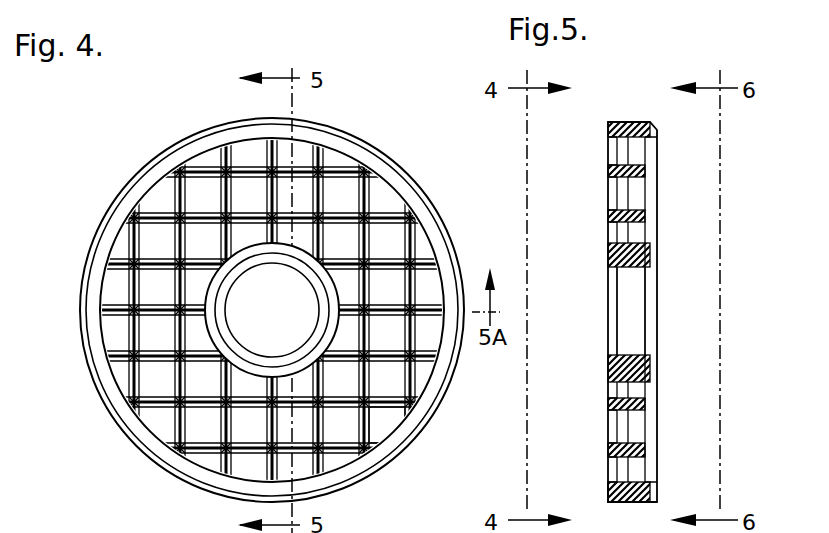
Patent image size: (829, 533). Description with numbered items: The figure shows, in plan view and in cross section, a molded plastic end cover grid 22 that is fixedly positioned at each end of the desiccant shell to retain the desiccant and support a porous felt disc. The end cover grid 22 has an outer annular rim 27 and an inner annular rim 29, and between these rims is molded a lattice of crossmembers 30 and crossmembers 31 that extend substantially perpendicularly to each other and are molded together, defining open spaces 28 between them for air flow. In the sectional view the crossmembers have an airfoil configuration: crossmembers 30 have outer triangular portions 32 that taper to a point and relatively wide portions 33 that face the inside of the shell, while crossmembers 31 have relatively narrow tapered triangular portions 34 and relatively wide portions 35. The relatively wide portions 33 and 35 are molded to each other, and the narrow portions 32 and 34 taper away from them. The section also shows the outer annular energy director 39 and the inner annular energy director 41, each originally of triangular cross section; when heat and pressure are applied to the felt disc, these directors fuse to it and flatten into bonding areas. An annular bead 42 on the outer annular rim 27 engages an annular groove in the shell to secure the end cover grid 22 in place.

In FIG. 4, the end cover grid 22 is at (152, 186).
In FIG. 5, the end cover grid 22 is at (645, 122).
In FIG. 4, the annular bead 42 is at (158, 206).
In FIG. 5, the annular bead 42 is at (620, 122).
In FIG. 4, the outer annular rim 27 is at (114, 240).
In FIG. 5, the outer annular rim 27 is at (640, 500).
In FIG. 4, the open spaces 28 is at (243, 190).
In FIG. 4, the crossmembers 30 is at (392, 200).
In FIG. 5, the crossmembers 30 is at (648, 174).
In FIG. 4, the outer triangular portions 32 is at (387, 226).
In FIG. 5, the outer triangular portions 32 is at (620, 170).
In FIG. 4, the narrow tapered triangular portions 34 is at (176, 446).
In FIG. 5, the narrow tapered triangular portions 34 is at (612, 150).
In FIG. 4, the crossmembers 31 is at (410, 418).
In FIG. 5, the crossmembers 31 is at (609, 192).
In FIG. 4, the inner annular rim 29 is at (240, 262).
In FIG. 5, the inner annular rim 29 is at (648, 262).
In FIG. 5, the outer annular energy director 39 is at (648, 133).
In FIG. 5, the relatively wide portions 33 is at (650, 165).
In FIG. 5, the relatively wide portions 35 is at (648, 190).
In FIG. 5, the inner annular energy director 41 is at (650, 247).